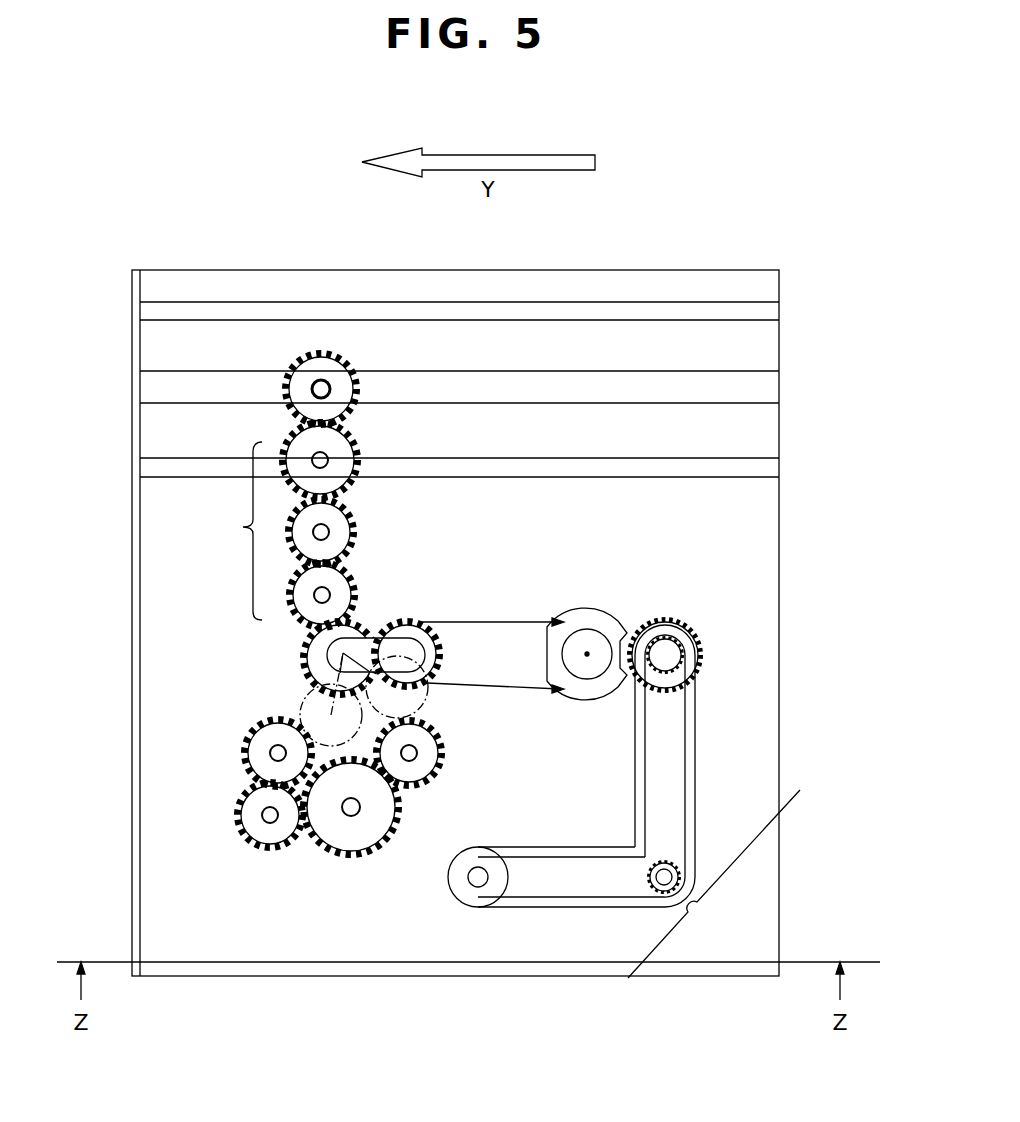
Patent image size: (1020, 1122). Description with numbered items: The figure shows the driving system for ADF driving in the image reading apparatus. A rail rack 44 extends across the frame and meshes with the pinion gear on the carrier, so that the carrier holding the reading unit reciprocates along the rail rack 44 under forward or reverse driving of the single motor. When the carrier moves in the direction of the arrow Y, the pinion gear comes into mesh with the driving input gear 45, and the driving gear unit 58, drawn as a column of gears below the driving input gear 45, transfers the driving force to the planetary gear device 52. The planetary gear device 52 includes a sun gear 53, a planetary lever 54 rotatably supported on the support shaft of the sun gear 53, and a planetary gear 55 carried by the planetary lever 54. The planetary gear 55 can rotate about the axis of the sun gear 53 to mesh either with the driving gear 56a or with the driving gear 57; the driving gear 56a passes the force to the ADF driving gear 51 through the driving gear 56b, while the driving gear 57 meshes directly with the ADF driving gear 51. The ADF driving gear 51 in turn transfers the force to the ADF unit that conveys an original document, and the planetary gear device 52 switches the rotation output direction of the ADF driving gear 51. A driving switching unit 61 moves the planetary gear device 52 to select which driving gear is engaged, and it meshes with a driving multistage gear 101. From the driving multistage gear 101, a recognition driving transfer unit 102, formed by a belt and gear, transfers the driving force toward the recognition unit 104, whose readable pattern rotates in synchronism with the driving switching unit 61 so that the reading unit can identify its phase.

The rail rack 44 is at (593, 383).
The driving input gear 45 is at (287, 408).
The driving gear unit 58 is at (243, 527).
The sun gear 53 is at (325, 650).
The planetary gear device 52 is at (396, 610).
The planetary lever 54 is at (408, 643).
The planetary gear 55 is at (457, 623).
The driving switching unit 61 is at (635, 608).
The driving multistage gear 101 is at (665, 655).
The driving gear 57 is at (423, 766).
The driving gear 56a is at (270, 753).
The driving gear 56b is at (262, 818).
The ADF driving gear 51 is at (362, 827).
The recognition unit 104 is at (475, 895).
The recognition driving transfer unit 102 is at (708, 926).